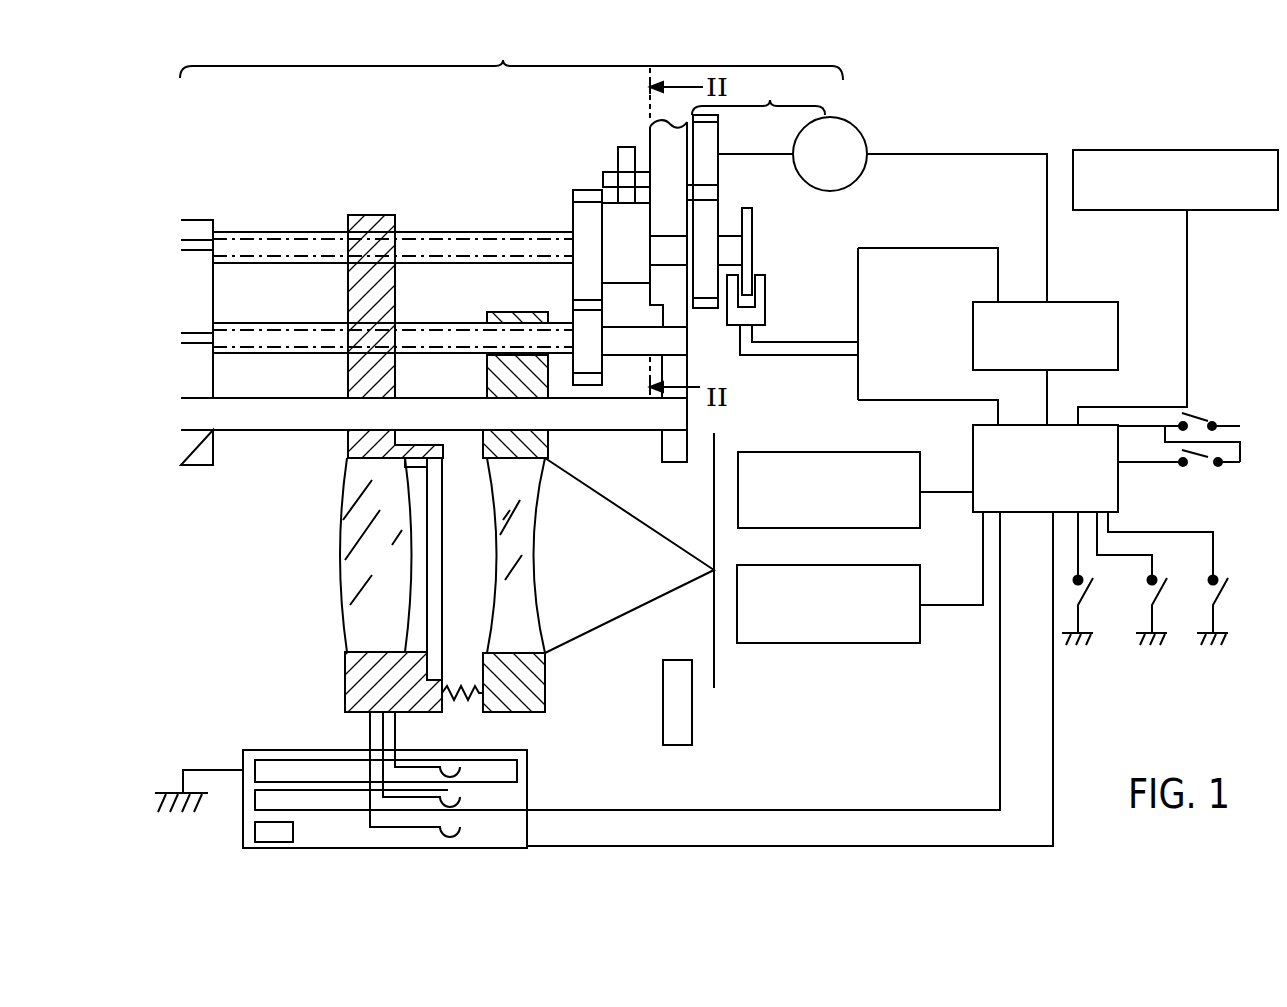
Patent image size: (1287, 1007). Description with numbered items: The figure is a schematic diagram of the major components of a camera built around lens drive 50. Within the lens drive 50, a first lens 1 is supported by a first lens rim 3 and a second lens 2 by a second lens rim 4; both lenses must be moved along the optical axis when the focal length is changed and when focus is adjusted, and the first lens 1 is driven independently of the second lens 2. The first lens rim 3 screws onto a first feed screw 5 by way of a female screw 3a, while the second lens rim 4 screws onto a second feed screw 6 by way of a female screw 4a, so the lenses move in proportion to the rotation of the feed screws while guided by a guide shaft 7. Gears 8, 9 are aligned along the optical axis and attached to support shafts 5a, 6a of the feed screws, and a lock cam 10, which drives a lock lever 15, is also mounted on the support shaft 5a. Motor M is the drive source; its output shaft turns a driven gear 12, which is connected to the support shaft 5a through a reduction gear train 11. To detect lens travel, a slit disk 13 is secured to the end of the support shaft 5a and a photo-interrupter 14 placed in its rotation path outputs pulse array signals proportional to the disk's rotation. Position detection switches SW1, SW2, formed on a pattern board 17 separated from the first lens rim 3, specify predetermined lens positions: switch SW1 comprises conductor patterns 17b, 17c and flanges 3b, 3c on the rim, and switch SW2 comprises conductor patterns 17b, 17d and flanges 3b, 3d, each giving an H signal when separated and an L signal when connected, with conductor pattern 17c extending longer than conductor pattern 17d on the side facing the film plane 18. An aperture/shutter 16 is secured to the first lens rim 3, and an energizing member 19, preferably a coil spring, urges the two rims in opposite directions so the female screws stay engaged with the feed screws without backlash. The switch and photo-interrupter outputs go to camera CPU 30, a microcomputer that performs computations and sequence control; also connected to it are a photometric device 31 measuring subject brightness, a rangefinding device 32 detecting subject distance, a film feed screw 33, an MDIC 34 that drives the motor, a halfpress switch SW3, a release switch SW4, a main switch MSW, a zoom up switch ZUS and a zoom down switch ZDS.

The first lens 1 is at (345, 548).
The second lens 2 is at (527, 562).
The first lens rim 3 is at (362, 364).
The female screw 3a is at (385, 237).
The flange 3b is at (455, 775).
The flange 3c is at (448, 790).
The flange 3d is at (441, 838).
The second lens rim 4 is at (497, 383).
The female screw 4a is at (518, 334).
The first feed screw 5 is at (293, 243).
The support shaft 5a is at (671, 248).
The second feed screw 6 is at (465, 345).
The support shaft 6a is at (688, 338).
The guide shaft 7 is at (250, 418).
The gear 8 is at (585, 218).
The gear 9 is at (594, 361).
The lock cam 10 is at (623, 252).
The reduction gear train 11 is at (869, 186).
The driven gear 12 is at (712, 222).
The slit disk 13 is at (750, 246).
The photo-interrupter 14 is at (760, 311).
The lock lever 15 is at (620, 163).
The aperture/shutter 16 is at (442, 536).
The pattern board 17 is at (527, 805).
The conductor pattern 17b is at (517, 775).
The conductor pattern 17c is at (348, 800).
The conductor pattern 17d is at (275, 832).
The film plane 18 is at (714, 660).
The energizing member 19 is at (466, 690).
The camera CPU 30 is at (1118, 490).
The photometric device 31 is at (898, 643).
The rangefinding device 32 is at (1190, 150).
The film feed screw 33 is at (858, 452).
The MDIC 34 is at (1088, 302).
The lens drive 50 is at (511, 57).
The position detection switch SW1 is at (243, 797).
The position detection switch SW2 is at (243, 835).
The halfpress switch SW3 is at (1192, 426).
The release switch SW4 is at (1192, 477).
The main switch MSW is at (1082, 600).
The zoom up switch ZUS is at (1134, 600).
The zoom down switch ZDS is at (1171, 600).